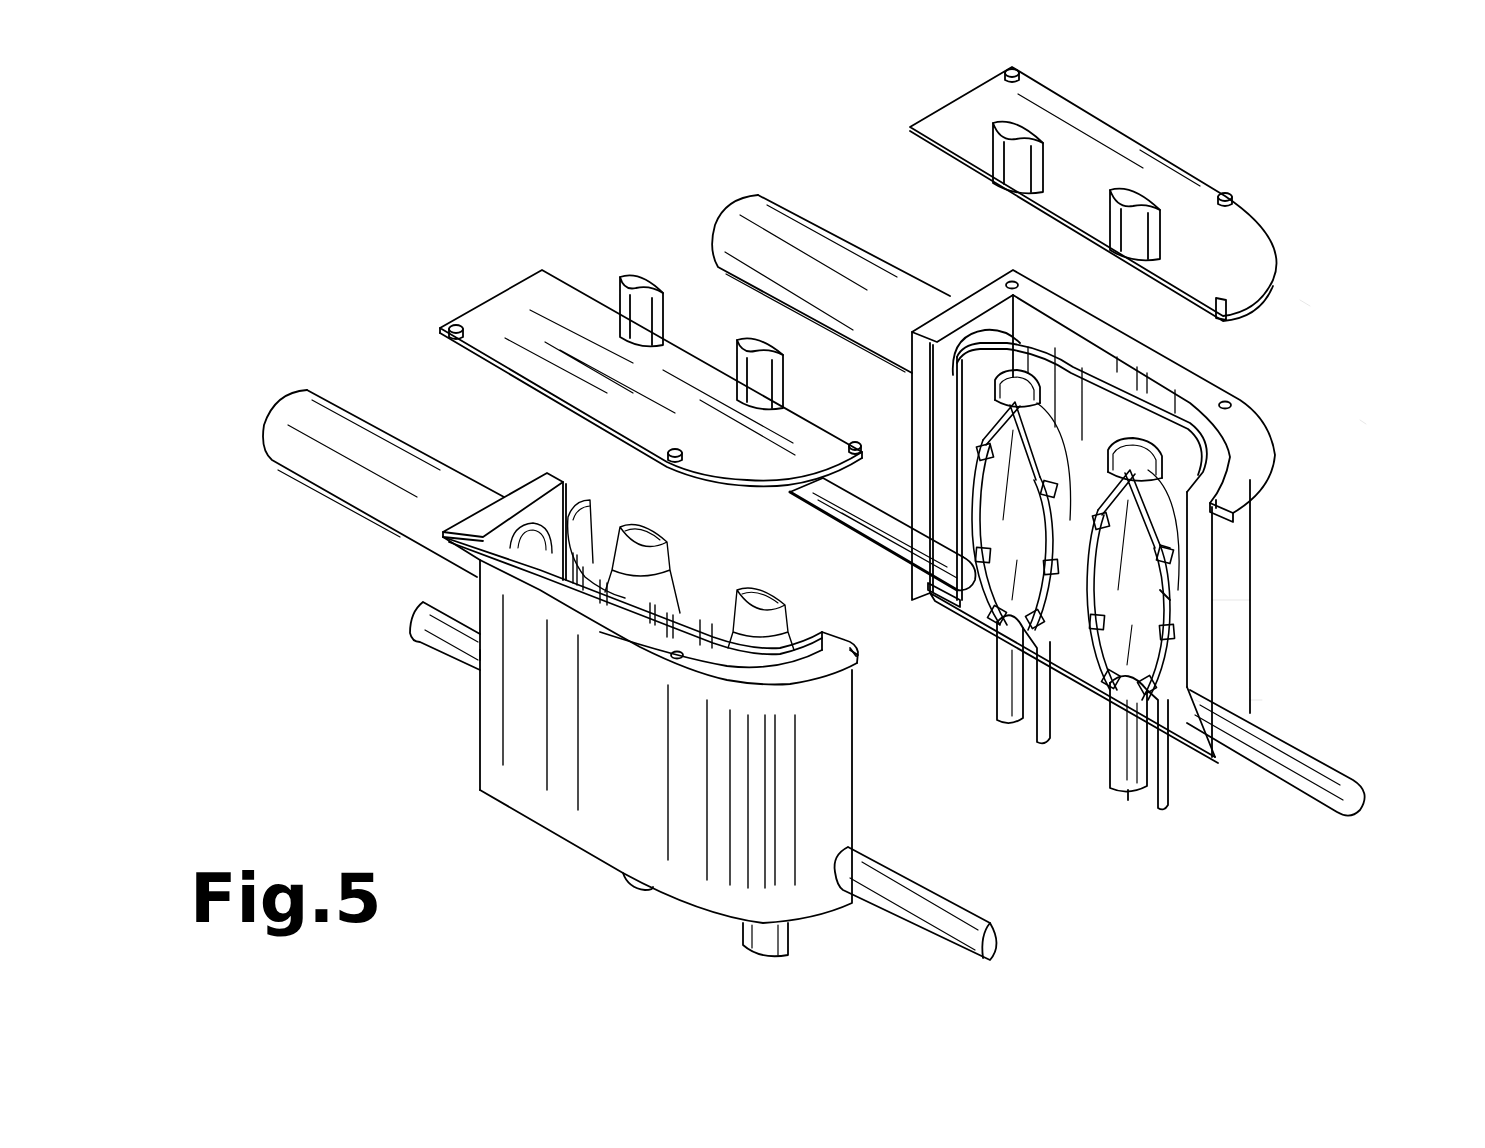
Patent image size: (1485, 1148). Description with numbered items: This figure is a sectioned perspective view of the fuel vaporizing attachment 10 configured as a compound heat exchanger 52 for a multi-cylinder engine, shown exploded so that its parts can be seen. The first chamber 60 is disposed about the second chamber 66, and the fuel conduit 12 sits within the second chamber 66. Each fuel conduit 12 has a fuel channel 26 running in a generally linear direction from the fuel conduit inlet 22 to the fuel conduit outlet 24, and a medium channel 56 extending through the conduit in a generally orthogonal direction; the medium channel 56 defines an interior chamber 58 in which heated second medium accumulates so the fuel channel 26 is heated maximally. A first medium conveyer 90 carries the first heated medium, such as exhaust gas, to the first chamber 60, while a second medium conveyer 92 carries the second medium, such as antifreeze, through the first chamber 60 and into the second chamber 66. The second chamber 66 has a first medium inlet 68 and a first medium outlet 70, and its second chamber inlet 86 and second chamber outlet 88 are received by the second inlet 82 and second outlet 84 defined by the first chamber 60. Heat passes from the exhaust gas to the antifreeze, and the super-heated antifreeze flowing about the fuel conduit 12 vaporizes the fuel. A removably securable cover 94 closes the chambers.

The fuel vaporizing attachment 10 is at (1365, 418).
The fuel conduit 12 is at (1057, 723).
The fuel conduit inlet 22 is at (1135, 440).
The fuel conduit outlet 24 is at (1134, 790).
The fuel channel 26 is at (1165, 590).
The compound heat exchanger 52 is at (1314, 293).
The medium channel 56 is at (1172, 548).
The interior chamber 58 is at (1040, 540).
The first chamber 60 is at (1243, 548).
The second chamber 66 is at (860, 655).
The first medium inlet 68 is at (948, 292).
The first medium outlet 70 is at (470, 587).
The second inlet 82 is at (470, 678).
The second outlet 84 is at (1268, 693).
The second chamber inlet 86 is at (922, 578).
The second chamber outlet 88 is at (1260, 713).
The first medium conveyer 90 is at (332, 500).
The second medium conveyer 92 is at (420, 640).
The cover 94 is at (548, 387).